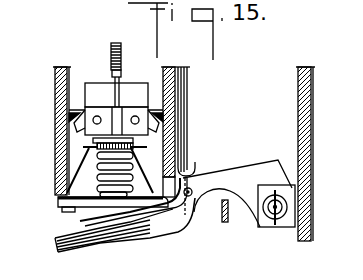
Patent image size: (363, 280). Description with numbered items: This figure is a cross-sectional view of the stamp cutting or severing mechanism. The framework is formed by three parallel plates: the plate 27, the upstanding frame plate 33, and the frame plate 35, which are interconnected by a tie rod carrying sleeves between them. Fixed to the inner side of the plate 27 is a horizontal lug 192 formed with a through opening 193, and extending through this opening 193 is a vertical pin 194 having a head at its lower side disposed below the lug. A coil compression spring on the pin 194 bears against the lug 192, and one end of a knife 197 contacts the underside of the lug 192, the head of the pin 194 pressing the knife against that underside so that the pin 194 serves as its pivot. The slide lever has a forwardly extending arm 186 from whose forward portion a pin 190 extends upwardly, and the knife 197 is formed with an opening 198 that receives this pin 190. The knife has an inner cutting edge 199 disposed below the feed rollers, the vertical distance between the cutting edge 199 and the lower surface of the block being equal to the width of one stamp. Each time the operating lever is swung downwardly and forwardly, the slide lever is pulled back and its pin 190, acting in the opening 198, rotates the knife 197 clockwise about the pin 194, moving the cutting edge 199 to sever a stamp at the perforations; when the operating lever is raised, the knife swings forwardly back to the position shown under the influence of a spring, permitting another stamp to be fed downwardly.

The plate 27 is at (316, 114).
The frame plate 33 is at (178, 68).
The frame plate 35 is at (57, 95).
The forwardly extending arm 186 is at (187, 114).
The pin 190 is at (190, 189).
The horizontal lug 192 is at (283, 228).
The opening 193 is at (257, 224).
The vertical pin 194 is at (262, 185).
The knife 197 is at (144, 253).
The opening 198 is at (190, 220).
The inner cutting edge 199 is at (82, 240).